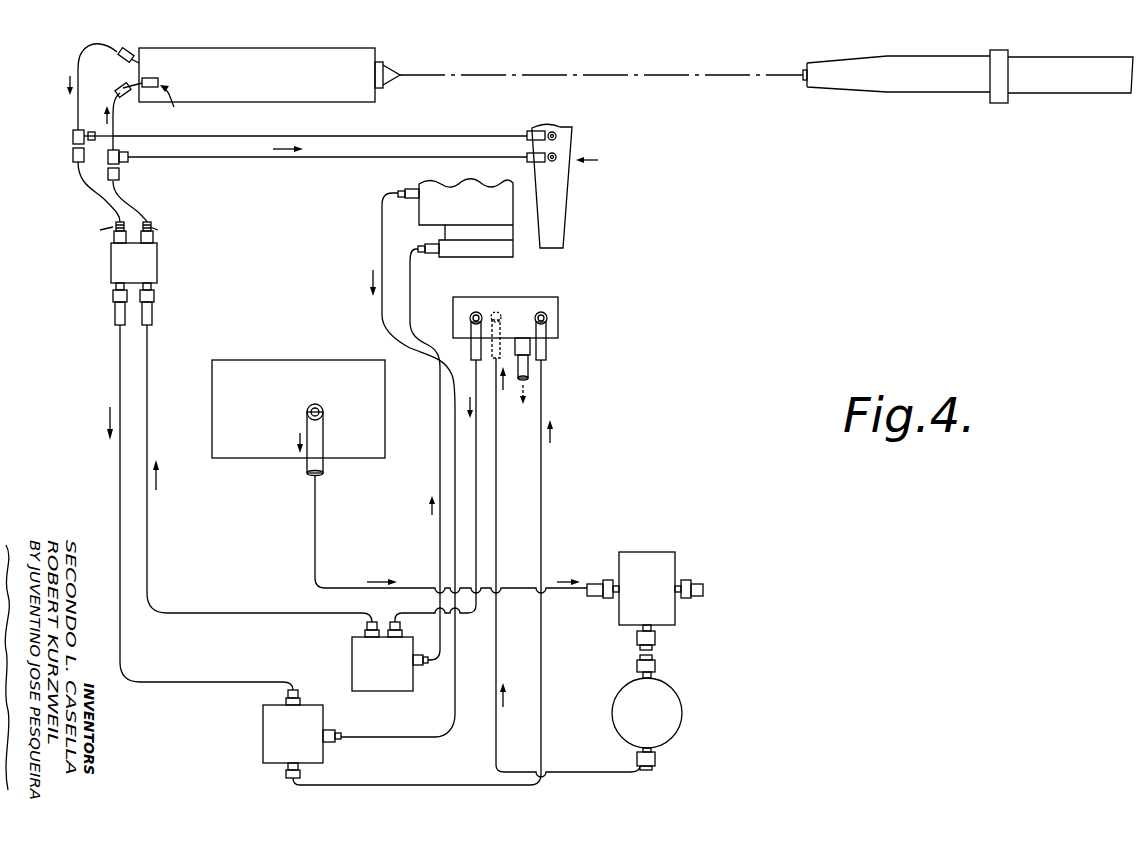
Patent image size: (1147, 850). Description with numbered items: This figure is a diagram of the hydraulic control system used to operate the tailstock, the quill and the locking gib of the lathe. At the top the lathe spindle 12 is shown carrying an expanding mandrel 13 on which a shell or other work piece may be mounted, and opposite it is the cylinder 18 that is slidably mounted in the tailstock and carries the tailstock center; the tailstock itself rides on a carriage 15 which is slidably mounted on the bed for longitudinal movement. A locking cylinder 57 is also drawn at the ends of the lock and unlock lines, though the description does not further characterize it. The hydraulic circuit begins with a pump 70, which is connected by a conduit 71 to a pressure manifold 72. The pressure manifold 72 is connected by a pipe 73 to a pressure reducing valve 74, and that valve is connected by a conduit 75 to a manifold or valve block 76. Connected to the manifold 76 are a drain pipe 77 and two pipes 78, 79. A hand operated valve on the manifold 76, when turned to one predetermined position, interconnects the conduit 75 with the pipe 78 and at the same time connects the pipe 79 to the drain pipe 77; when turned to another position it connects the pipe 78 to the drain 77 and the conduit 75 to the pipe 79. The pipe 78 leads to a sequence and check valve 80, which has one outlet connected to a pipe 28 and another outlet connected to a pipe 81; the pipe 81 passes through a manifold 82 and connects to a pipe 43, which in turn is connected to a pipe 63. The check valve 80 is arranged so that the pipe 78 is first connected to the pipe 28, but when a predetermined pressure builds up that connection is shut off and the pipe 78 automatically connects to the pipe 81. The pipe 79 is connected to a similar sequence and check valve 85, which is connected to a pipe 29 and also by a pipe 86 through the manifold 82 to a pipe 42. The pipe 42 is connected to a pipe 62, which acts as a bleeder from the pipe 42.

The spindle 12 is at (1080, 80).
The expanding mandrel 13 is at (922, 80).
The carriage 15 is at (516, 246).
The cylinder 18 is at (334, 49).
The pipe 28 is at (411, 296).
The pipe 29 is at (380, 268).
The pipe 42 is at (97, 45).
The pipe 43 is at (117, 128).
The locking cylinder 57 is at (565, 140).
The pipe 62 is at (503, 134).
The pipe 63 is at (456, 155).
The pump 70 is at (245, 397).
The conduit 71 is at (318, 466).
The pressure manifold 72 is at (657, 552).
The pipe 73 is at (657, 668).
The pressure reducing valve 74 is at (677, 737).
The conduit 75 is at (498, 497).
The manifold or valve block 76 is at (556, 310).
The drain pipe 77 is at (530, 372).
The pipe 78 is at (472, 351).
The pipe 79 is at (546, 356).
The sequence and check valve 80 is at (384, 692).
The pipe 81 is at (148, 562).
The manifold 82 is at (120, 266).
The sequence and check valve 85 is at (263, 752).
The pipe 86 is at (228, 682).